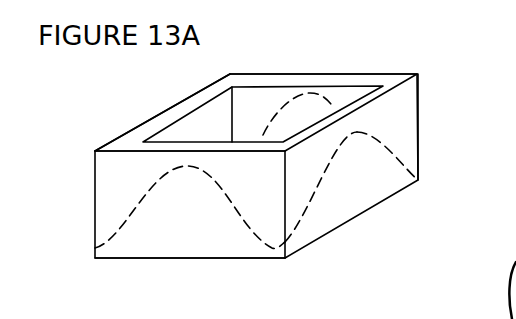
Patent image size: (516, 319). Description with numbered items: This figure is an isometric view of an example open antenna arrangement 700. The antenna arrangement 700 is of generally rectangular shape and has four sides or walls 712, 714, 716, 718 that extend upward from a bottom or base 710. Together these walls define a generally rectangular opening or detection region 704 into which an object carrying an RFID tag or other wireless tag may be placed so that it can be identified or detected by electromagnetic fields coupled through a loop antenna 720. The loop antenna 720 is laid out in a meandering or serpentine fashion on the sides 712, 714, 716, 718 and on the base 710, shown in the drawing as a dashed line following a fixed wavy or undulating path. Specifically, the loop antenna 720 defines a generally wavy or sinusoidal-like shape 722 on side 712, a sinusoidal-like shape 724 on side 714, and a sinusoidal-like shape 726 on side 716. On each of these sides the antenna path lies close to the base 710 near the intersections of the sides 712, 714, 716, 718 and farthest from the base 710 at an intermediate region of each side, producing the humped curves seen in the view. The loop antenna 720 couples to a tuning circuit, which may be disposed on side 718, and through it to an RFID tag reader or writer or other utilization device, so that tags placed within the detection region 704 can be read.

The open antenna arrangement 700 is at (422, 70).
The opening or detection region 704 is at (264, 110).
The bottom or base 710 is at (157, 259).
The side or wall 712 is at (231, 238).
The side or wall 714 is at (378, 183).
The side or wall 716 is at (342, 73).
The side or wall 718 is at (181, 106).
The loop antenna 720 is at (311, 222).
The wavy or sinusoidal-like shape 722 is at (127, 220).
The wavy or sinusoidal-like shape 724 is at (398, 162).
The wavy or sinusoidal-like shape 726 is at (316, 92).